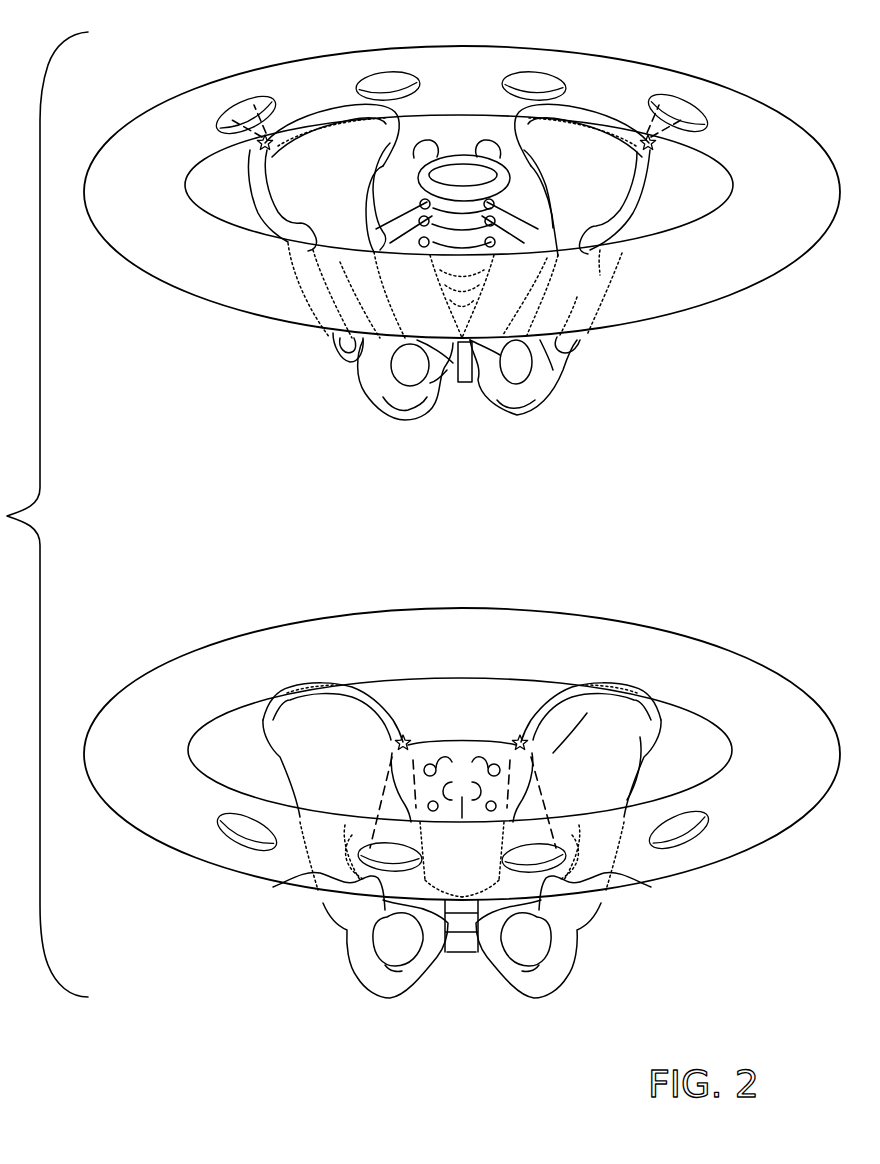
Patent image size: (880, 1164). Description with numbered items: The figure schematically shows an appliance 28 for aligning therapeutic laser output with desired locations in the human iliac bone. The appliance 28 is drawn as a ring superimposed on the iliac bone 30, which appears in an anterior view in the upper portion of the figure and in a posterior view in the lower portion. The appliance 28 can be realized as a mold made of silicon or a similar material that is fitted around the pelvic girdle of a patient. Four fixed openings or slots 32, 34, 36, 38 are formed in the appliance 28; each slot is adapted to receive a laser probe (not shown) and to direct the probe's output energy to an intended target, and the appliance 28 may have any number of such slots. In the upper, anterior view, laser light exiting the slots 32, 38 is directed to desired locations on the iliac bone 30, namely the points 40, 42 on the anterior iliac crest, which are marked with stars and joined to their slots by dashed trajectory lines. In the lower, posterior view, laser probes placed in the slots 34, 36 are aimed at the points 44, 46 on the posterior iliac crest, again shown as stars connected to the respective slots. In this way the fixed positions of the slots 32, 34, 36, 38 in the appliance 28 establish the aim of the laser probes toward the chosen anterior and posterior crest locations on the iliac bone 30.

The appliance 28 is at (197, 300).
The iliac bone 30 is at (242, 202).
The slot 32 is at (236, 99).
The slot 34 is at (384, 73).
The slot 36 is at (537, 72).
The slot 38 is at (689, 100).
The point on the anterior iliac crest 40 is at (258, 156).
The point on the anterior iliac crest 42 is at (668, 155).
The point on the posterior iliac crest 44 is at (517, 742).
The point on the posterior iliac crest 46 is at (412, 742).